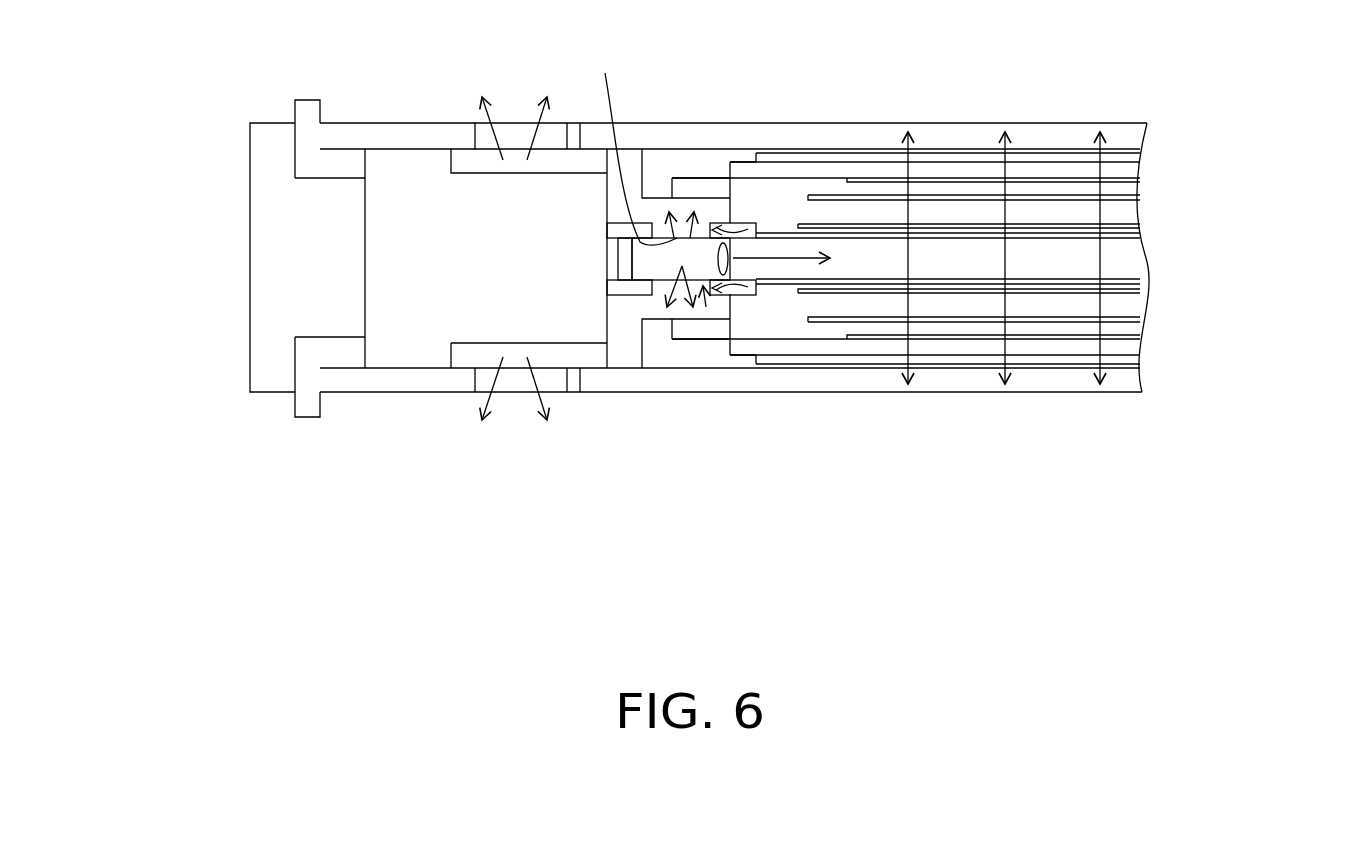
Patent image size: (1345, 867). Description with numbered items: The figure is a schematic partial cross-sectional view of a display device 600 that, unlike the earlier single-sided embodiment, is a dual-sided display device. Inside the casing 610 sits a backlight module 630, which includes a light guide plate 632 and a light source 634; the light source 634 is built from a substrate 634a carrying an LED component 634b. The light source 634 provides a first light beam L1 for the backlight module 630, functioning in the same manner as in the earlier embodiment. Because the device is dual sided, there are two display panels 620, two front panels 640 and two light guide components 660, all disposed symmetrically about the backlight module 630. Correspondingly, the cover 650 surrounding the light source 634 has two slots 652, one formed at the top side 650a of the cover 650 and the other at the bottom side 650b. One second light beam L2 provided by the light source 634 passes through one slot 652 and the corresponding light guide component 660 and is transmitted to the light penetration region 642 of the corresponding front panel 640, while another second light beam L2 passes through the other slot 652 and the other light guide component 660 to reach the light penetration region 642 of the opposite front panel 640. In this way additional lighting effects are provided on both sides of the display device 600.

The display device 600 is at (1325, 526).
The casing 610 is at (263, 224).
The display panel 620 is at (787, 330).
The backlight module 630 is at (885, 456).
The light guide plate 632 is at (865, 263).
The light source 634 is at (700, 305).
The substrate 634a is at (622, 288).
The LED component 634b is at (677, 290).
The front panel 640 is at (1125, 138).
The light penetration region 642 is at (513, 128).
The cover 650 is at (610, 260).
The top side 650a is at (645, 221).
The bottom side 650b is at (639, 297).
The slot 652 is at (714, 230).
The light guide component 660 is at (463, 353).
The first light beam L1 is at (908, 168).
The second light beam L2 is at (567, 455).